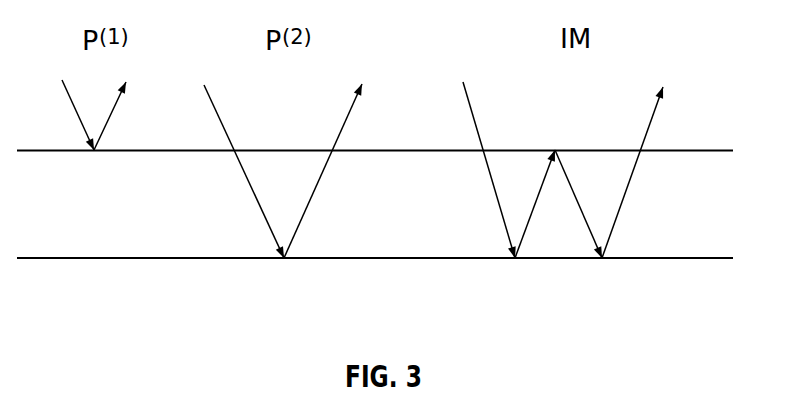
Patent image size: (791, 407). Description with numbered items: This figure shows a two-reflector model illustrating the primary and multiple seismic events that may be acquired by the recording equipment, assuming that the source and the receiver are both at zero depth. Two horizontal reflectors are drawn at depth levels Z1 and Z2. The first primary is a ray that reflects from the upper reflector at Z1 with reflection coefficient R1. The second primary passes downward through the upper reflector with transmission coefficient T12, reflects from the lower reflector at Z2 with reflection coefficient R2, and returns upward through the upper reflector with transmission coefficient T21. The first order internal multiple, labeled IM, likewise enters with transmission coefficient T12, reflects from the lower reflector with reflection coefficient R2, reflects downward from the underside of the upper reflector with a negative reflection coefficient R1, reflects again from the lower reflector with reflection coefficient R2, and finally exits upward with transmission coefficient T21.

The first interface / depth level Z1 is at (400, 151).
The second interface / depth level Z2 is at (400, 261).
The reflection coefficient R1 is at (332, 169).
The reflection coefficient R2 is at (447, 274).
The transmission coefficient T12 is at (355, 170).
The transmission coefficient T21 is at (492, 171).